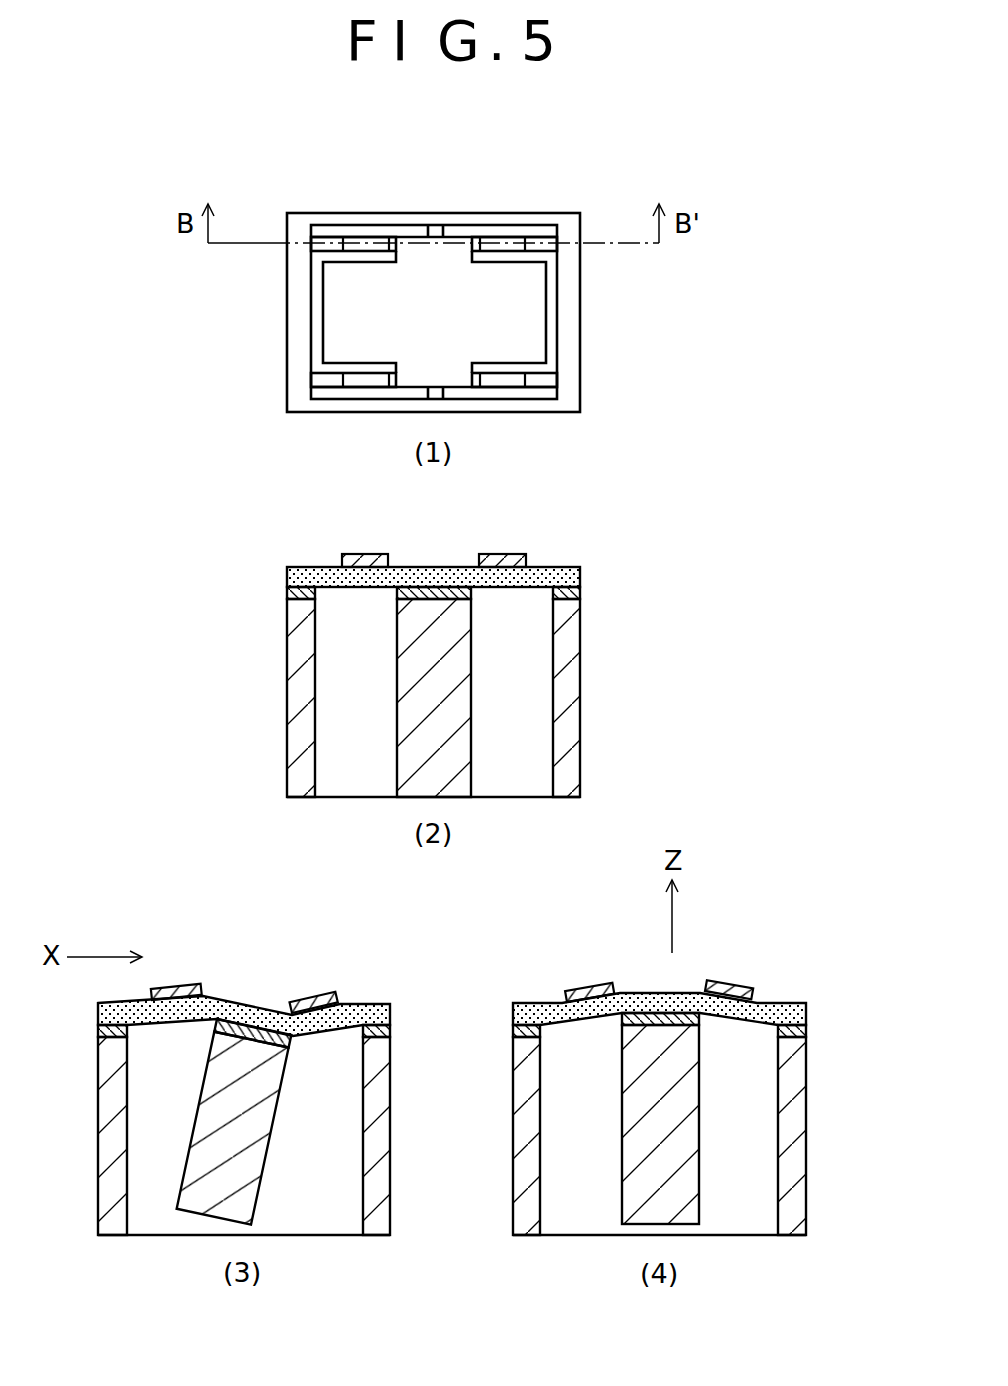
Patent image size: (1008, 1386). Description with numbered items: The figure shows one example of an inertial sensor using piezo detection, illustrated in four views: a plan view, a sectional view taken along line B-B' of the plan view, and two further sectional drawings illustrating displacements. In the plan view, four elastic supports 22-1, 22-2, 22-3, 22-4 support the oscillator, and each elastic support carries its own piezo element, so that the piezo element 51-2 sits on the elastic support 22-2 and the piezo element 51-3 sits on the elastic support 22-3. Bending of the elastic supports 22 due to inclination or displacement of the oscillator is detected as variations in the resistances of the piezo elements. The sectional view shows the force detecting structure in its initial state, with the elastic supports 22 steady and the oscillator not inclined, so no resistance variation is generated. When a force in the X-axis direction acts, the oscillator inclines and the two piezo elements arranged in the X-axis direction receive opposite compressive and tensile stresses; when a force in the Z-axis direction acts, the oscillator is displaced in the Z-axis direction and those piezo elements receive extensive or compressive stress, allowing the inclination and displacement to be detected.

The elastic supports 22 is at (580, 572).
The elastic support 22-1 is at (538, 246).
The elastic support 22-2 is at (545, 381).
The elastic support 22-3 is at (325, 382).
The elastic support 22-4 is at (332, 246).
The piezo element 51-2 is at (502, 382).
The piezo element 51-3 is at (359, 379).